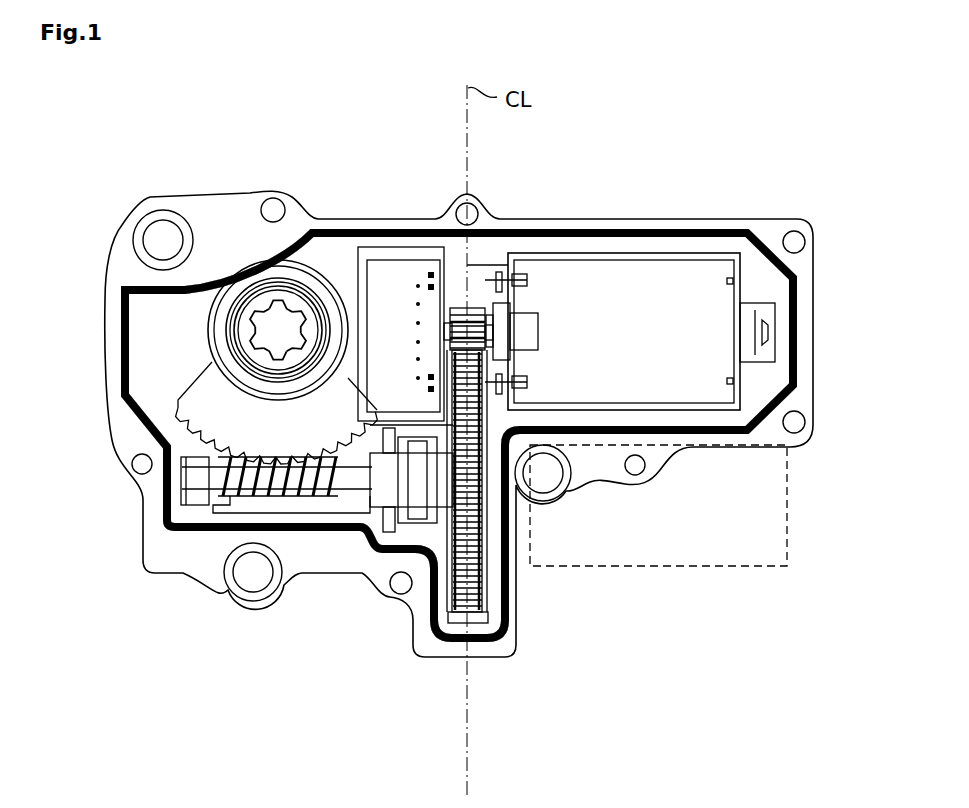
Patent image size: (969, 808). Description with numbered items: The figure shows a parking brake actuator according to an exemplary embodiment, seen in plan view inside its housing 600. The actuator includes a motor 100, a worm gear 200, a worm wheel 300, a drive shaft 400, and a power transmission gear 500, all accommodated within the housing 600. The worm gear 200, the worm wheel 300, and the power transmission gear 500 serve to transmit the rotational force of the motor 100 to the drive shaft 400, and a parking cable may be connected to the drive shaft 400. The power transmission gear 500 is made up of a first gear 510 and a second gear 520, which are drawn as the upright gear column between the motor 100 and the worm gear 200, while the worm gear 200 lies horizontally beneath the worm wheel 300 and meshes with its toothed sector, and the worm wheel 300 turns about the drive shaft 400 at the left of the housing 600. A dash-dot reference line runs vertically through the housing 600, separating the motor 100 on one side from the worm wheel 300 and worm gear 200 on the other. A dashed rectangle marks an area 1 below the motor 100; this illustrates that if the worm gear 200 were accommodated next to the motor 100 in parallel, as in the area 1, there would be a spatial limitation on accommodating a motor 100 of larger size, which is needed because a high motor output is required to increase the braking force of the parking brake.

The area 1 is at (668, 567).
The motor 100 is at (646, 292).
The worm gear 200 is at (192, 480).
The worm wheel 300 is at (190, 404).
The drive shaft 400 is at (266, 309).
The power transmission gear 500 is at (338, 507).
The first gear 510 is at (450, 312).
The second gear 520 is at (452, 605).
The housing 600 is at (383, 212).